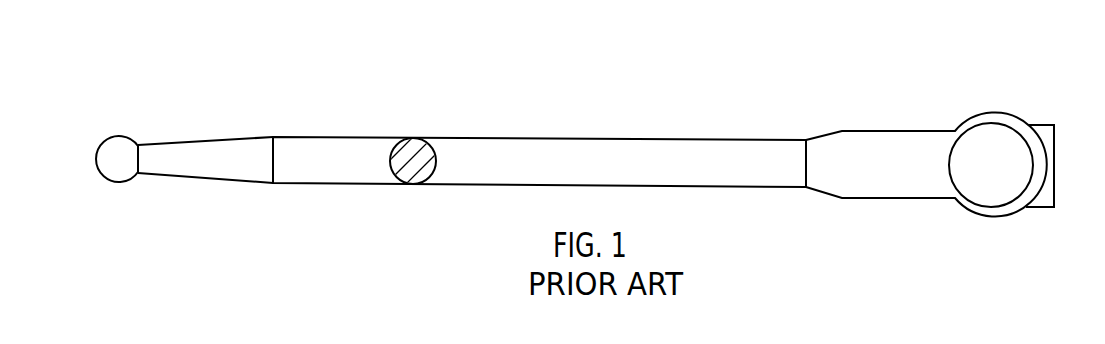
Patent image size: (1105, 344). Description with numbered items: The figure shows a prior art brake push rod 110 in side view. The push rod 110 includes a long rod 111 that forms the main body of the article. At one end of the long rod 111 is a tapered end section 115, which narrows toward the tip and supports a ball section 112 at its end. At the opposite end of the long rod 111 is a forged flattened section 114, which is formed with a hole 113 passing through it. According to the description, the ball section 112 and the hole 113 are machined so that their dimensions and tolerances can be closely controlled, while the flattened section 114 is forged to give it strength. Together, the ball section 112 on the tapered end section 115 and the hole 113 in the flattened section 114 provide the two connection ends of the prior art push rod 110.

The brake push rod 110 is at (786, 97).
The long rod 111 is at (537, 139).
The ball section 112 is at (116, 135).
The hole 113 is at (982, 142).
The flattened section 114 is at (1013, 116).
The tapered end section 115 is at (192, 140).